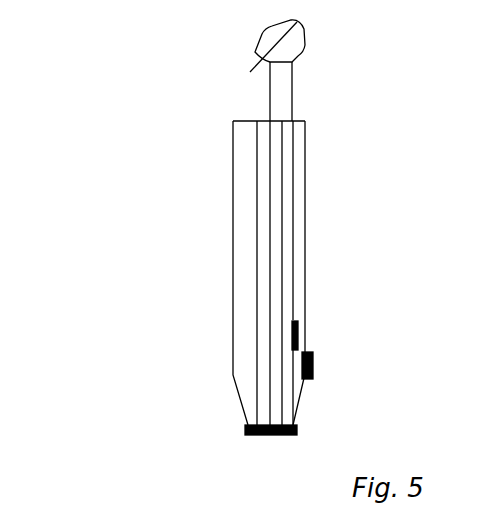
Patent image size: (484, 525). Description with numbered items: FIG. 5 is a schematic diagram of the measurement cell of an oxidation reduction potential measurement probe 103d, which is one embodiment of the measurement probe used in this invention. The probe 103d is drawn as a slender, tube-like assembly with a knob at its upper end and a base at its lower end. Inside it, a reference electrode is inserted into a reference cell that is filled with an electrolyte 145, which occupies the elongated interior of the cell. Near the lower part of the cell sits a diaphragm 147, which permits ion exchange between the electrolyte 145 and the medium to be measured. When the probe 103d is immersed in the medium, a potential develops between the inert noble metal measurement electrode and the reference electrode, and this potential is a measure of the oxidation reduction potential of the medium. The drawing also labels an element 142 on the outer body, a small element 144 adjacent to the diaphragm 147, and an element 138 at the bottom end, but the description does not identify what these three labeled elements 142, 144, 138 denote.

The oxidation reduction potential measurement probe 103d is at (157, 71).
The outer barrel 142 is at (208, 273).
The electrolyte 145 is at (202, 273).
The stop member 144 is at (350, 334).
The diaphragm 147 is at (355, 375).
The base 138 is at (263, 465).